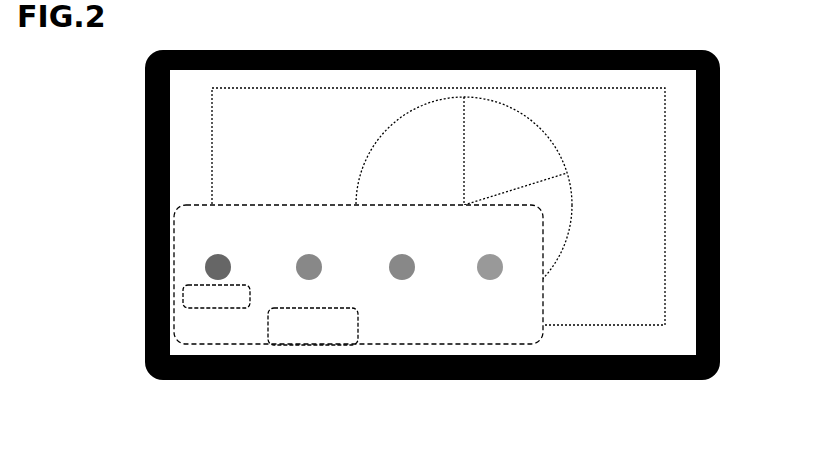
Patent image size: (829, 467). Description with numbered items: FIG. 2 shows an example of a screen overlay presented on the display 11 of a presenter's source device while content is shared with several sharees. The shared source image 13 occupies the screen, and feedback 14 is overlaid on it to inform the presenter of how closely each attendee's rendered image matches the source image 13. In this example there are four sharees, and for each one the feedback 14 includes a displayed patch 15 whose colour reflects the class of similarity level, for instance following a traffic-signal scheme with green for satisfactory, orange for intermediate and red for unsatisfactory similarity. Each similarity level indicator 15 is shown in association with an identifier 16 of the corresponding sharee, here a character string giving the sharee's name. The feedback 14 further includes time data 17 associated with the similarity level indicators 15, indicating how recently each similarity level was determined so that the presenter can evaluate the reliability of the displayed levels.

The display 11 is at (147, 150).
The source image 13 is at (653, 189).
The feedback 14 is at (369, 326).
The similarity level indicator 15 is at (207, 267).
The identifier 16 is at (182, 295).
The time data 17 is at (307, 345).